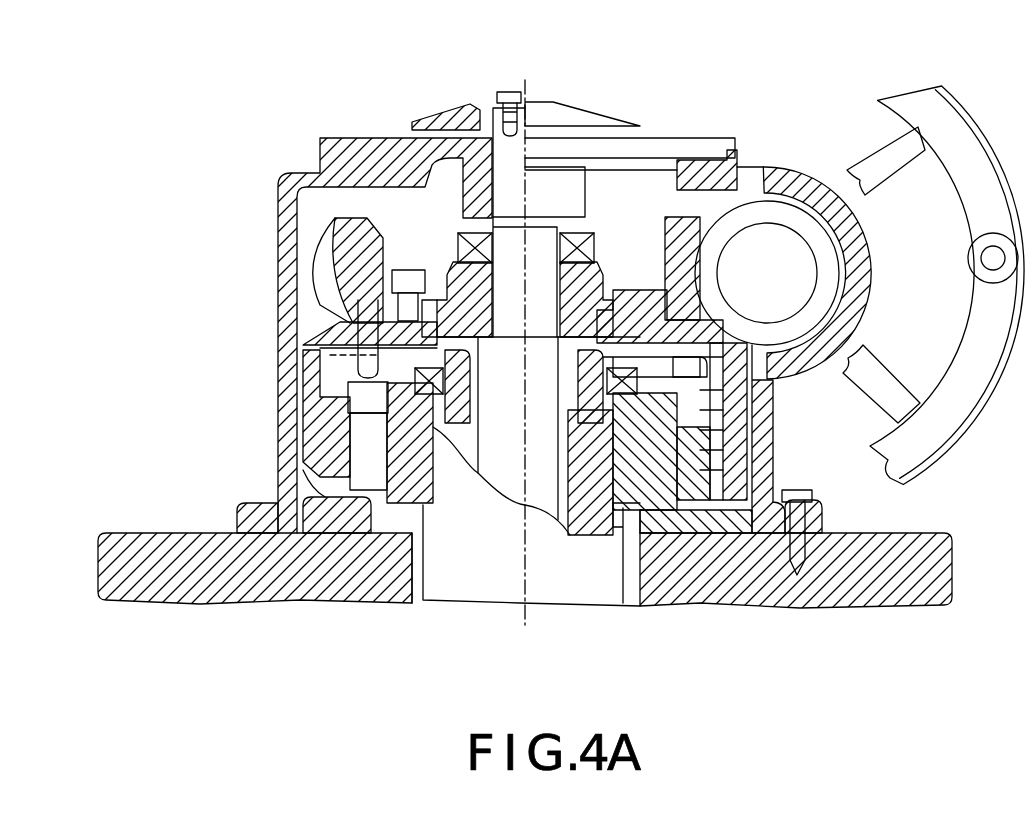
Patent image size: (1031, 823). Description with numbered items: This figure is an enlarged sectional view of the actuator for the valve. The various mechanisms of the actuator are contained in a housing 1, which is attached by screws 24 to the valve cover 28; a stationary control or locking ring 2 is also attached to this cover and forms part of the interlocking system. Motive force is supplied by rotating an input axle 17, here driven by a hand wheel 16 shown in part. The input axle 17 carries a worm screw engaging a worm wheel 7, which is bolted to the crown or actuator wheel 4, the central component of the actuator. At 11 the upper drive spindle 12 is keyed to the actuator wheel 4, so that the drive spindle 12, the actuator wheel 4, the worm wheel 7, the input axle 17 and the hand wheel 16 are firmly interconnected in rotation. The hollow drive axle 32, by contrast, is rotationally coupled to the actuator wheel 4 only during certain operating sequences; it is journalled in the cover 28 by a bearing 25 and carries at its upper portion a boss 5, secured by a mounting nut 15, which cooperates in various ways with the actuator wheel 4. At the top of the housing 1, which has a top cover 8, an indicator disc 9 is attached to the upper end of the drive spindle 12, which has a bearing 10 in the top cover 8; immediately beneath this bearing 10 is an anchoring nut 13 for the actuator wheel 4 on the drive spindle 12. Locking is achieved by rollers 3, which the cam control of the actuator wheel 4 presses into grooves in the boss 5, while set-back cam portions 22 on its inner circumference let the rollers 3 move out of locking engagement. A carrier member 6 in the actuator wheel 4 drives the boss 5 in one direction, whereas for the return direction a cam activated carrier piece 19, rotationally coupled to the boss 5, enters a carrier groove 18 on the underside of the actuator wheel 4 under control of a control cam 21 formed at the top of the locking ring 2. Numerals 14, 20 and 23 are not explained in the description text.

The housing 1 is at (232, 520).
The locking ring 2 is at (310, 490).
The rollers 3 is at (363, 442).
The actuator wheel 4 is at (585, 275).
The boss 5 is at (397, 403).
The carrier member 6 is at (328, 360).
The worm wheel 7 is at (312, 250).
The top cover 8 is at (370, 140).
The indicator disc 9 is at (455, 112).
The bearing 10 is at (498, 120).
The keying of drive spindle to actuator wheel 11 is at (460, 268).
The upper drive spindle 12 is at (535, 277).
The anchoring nut 13 is at (580, 243).
The shaft 14 is at (478, 373).
The mounting nut 15 is at (577, 365).
The hand wheel 16 is at (943, 108).
The input axle 17 is at (763, 232).
The carrier groove 18 is at (643, 307).
The carrier piece 19 is at (713, 332).
The ring 20 is at (693, 397).
The control cam 21 is at (685, 428).
The cam portions 22 is at (720, 452).
The hub 23 is at (610, 452).
The screws 24 is at (802, 498).
The bearing 25 is at (632, 580).
The valve cover 28 is at (233, 585).
The hollow drive axle 32 is at (583, 392).